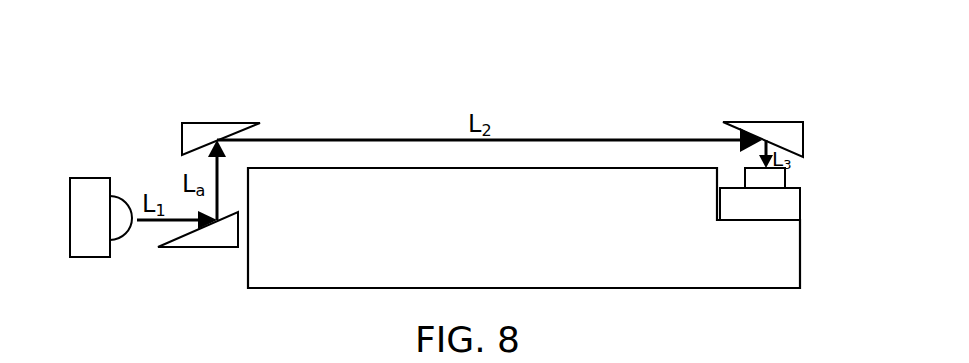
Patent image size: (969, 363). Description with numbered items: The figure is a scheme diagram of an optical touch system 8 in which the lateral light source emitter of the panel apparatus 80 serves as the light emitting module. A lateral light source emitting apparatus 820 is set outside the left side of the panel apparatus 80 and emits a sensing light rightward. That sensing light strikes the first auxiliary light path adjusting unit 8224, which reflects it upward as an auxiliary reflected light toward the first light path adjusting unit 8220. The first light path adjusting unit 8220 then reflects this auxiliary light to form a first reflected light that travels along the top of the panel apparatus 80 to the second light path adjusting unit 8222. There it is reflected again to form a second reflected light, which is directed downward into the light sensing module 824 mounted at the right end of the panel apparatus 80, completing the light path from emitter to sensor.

The optical touch system 8 is at (553, 103).
The panel apparatus 80 is at (248, 288).
The lateral light source emitting apparatus 820 is at (83, 178).
The light sensing module 824 is at (800, 197).
The first light path adjusting unit 8220 is at (240, 123).
The second light path adjusting unit 8222 is at (777, 122).
The first auxiliary light path adjusting unit 8224 is at (170, 247).